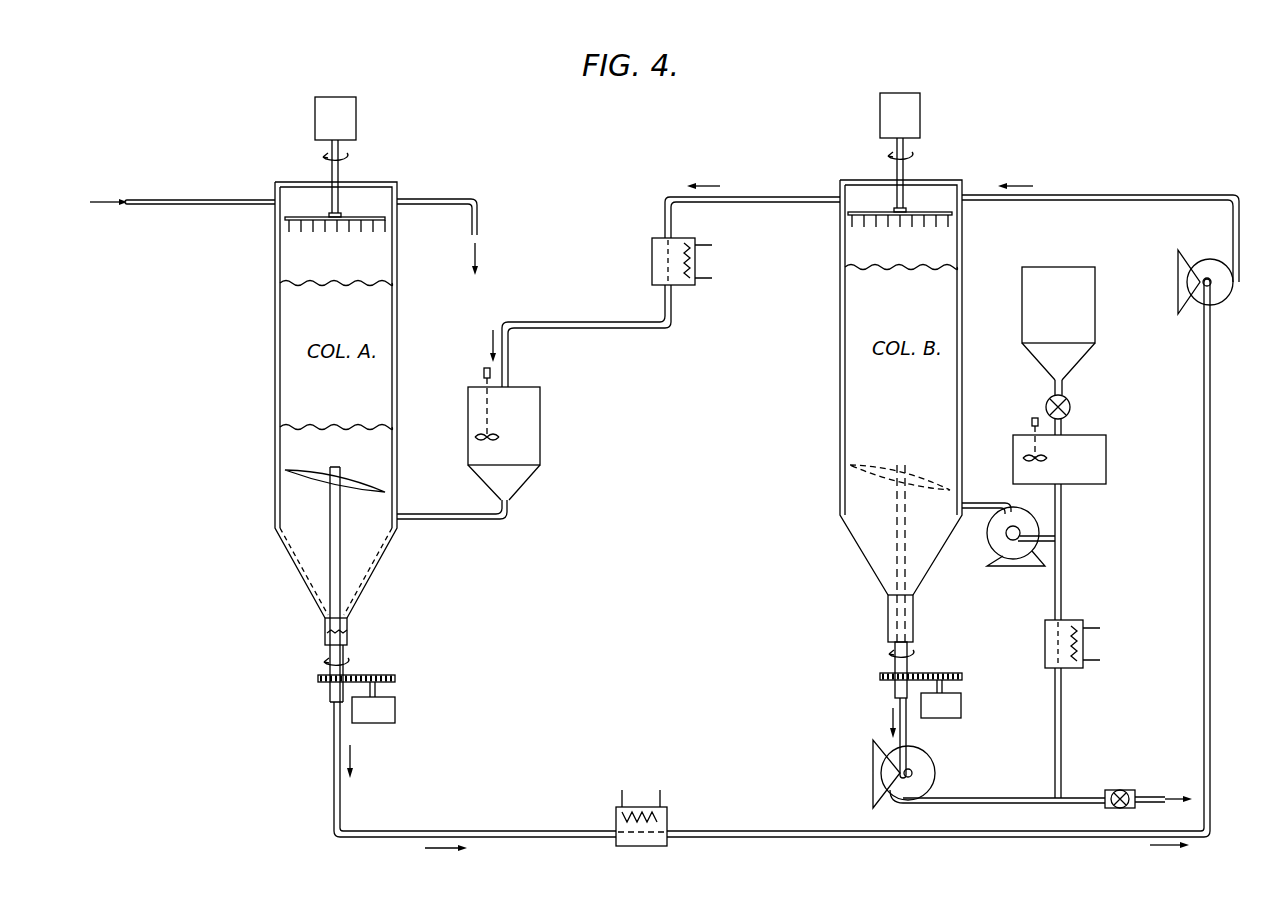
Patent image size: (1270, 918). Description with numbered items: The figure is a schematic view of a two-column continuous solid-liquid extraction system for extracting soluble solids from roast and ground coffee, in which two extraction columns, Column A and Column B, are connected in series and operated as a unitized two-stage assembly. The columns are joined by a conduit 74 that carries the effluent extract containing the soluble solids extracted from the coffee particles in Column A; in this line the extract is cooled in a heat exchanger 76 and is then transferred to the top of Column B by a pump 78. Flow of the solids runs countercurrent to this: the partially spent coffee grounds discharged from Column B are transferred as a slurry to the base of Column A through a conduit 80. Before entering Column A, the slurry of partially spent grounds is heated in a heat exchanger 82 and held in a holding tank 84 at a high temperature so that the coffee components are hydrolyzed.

The conduit 74 is at (845, 840).
The heat exchanger 76 is at (662, 827).
The pump 78 is at (1222, 300).
The conduit 80 is at (783, 196).
The heat exchanger 82 is at (700, 263).
The holding tank 84 is at (535, 416).